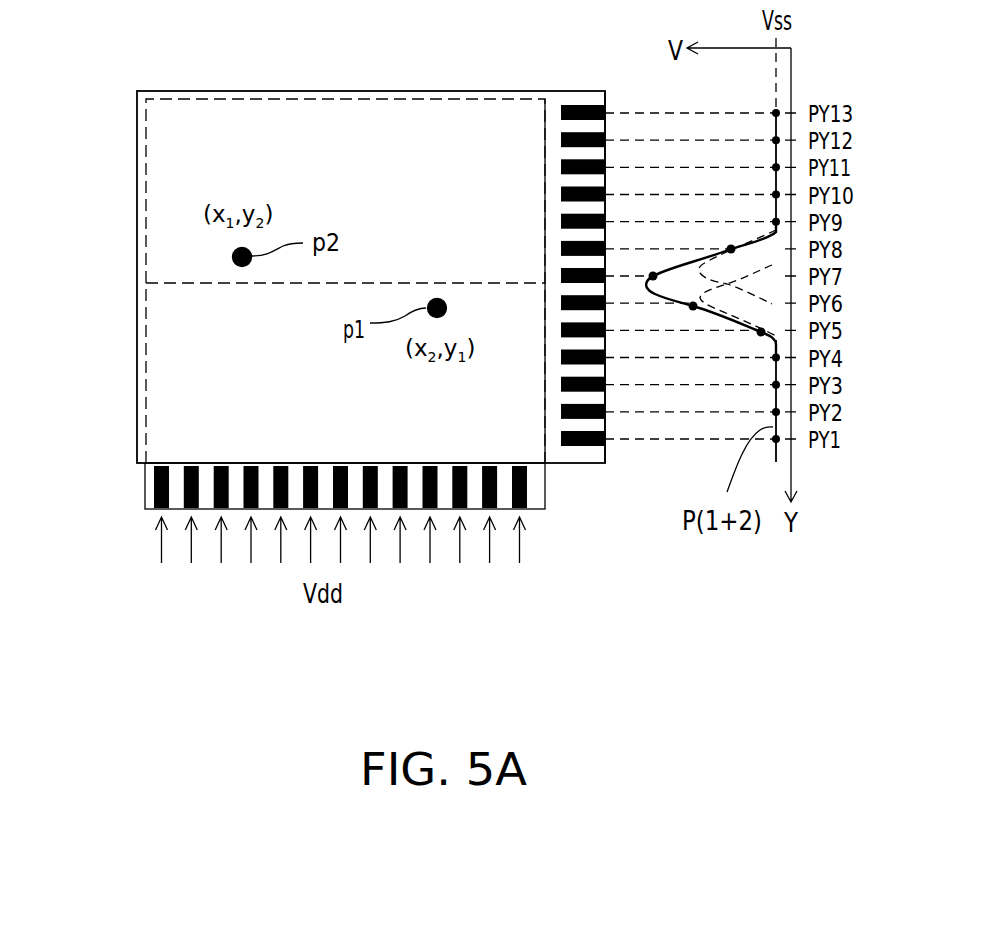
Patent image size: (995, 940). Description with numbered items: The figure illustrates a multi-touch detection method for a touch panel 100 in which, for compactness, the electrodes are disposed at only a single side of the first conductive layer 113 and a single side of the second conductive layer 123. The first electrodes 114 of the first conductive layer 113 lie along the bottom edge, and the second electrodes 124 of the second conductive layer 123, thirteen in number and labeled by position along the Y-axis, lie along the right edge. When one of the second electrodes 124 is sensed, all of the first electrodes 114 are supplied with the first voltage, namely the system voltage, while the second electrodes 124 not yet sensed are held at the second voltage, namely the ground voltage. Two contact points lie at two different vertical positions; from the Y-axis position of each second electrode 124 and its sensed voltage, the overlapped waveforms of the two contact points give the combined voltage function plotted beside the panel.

The touch display panel 100 is at (118, 358).
The first conductive layer 113 is at (545, 486).
The first electrodes 114 is at (152, 482).
The second conductive layer 123 is at (582, 463).
The second electrodes 124 is at (578, 105).